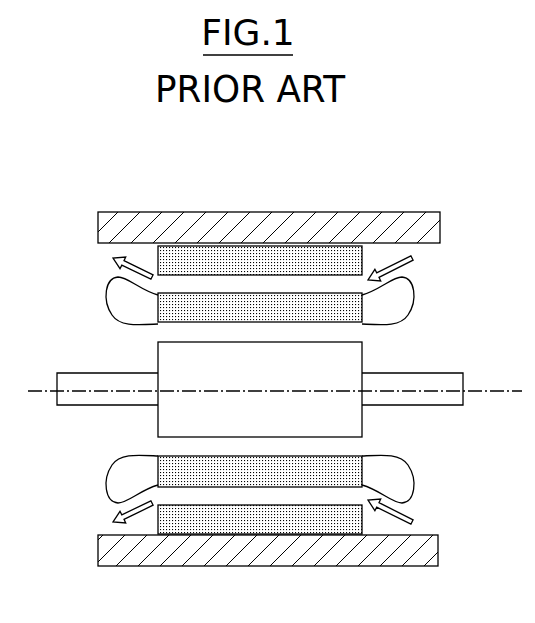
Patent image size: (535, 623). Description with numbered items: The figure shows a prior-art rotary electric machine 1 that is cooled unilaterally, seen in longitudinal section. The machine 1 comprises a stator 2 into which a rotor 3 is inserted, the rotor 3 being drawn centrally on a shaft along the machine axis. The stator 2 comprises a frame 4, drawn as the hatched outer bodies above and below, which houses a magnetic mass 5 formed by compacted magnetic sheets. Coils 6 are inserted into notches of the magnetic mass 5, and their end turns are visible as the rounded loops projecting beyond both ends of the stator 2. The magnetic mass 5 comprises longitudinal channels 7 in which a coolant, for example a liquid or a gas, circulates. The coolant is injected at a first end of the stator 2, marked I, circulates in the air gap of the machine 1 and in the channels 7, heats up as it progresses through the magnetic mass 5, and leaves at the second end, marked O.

The rotary electric machine 1 is at (447, 172).
The stator 2 is at (367, 200).
The rotor 3 is at (462, 372).
The frame 4 is at (354, 562).
The magnetic mass 5 is at (411, 327).
The coils 6 is at (121, 320).
The longitudinal channels 7 is at (277, 496).